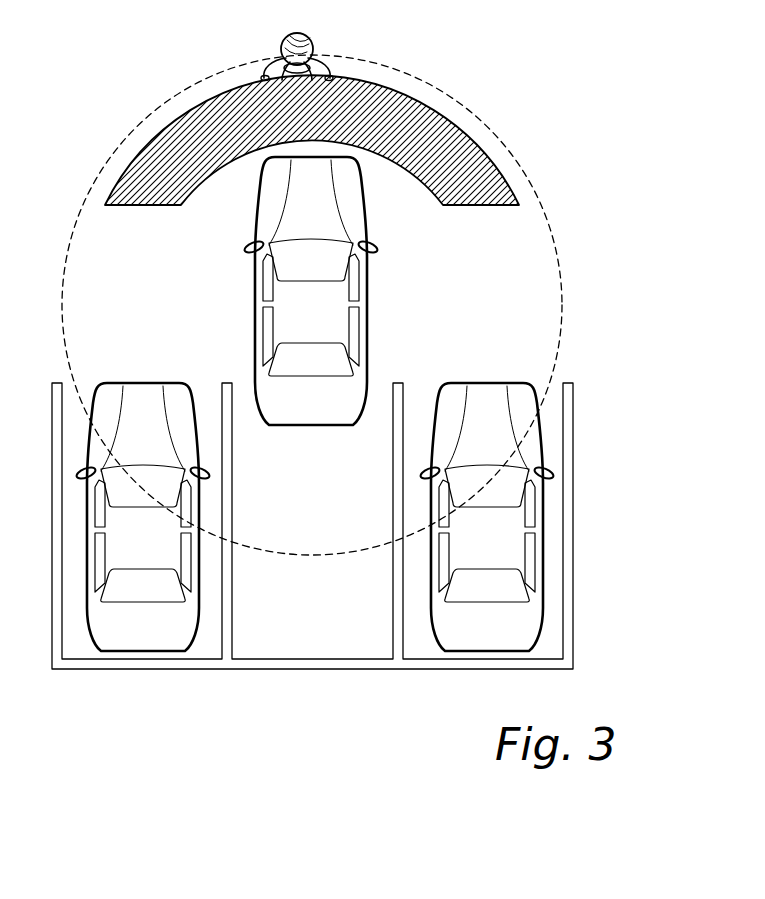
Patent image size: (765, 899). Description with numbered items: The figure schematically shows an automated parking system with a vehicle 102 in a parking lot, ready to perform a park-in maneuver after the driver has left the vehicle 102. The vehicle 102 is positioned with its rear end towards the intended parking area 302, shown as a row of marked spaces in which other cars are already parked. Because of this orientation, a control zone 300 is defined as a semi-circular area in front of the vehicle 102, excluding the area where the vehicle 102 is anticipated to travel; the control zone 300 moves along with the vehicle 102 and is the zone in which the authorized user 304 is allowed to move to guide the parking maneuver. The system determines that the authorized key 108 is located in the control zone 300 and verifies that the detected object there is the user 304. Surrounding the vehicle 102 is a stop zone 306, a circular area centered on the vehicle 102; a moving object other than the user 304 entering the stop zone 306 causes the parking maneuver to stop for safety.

The vehicle 102 is at (342, 297).
The authorized key 108 is at (331, 72).
The control zone 300 is at (463, 153).
The parking area 302 is at (290, 628).
The authorized user 304 is at (282, 46).
The stop zone 306 is at (535, 190).